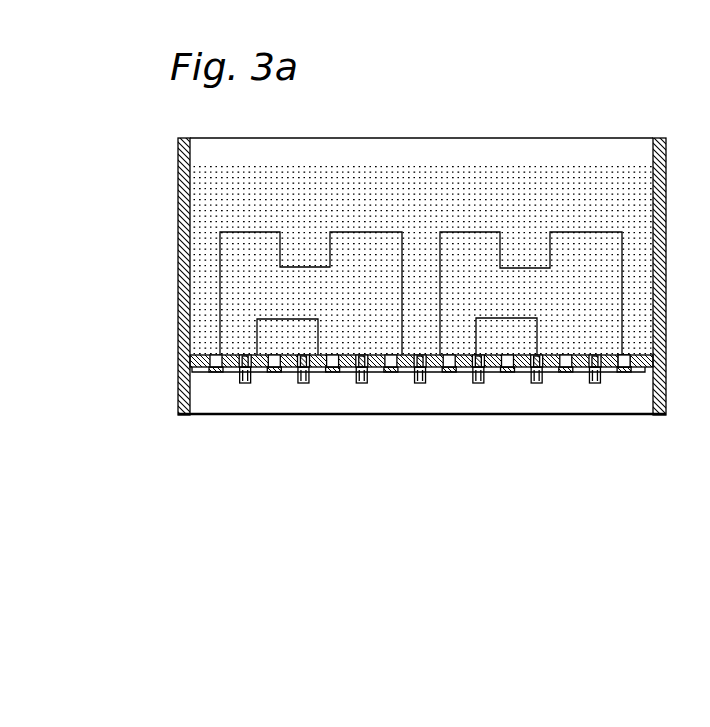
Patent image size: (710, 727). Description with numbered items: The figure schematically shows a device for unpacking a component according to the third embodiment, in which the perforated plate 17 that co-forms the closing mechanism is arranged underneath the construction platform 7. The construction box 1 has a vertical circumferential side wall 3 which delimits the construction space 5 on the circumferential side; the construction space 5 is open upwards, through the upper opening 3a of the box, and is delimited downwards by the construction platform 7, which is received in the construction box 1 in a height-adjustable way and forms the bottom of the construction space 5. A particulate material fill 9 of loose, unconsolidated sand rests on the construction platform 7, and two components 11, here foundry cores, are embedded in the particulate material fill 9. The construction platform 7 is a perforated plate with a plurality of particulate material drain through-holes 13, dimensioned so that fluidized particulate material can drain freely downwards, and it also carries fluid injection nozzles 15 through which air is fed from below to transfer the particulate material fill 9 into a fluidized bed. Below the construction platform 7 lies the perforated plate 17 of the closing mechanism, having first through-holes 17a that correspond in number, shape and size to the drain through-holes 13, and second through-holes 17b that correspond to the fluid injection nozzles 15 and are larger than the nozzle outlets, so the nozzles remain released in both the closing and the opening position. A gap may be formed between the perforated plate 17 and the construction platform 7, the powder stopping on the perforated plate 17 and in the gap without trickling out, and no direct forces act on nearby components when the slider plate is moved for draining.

The construction box 1 is at (376, 245).
The side wall 3 is at (180, 177).
The container opening 3a is at (197, 150).
The construction space 5 is at (422, 152).
The construction platform 7 is at (190, 362).
The particulate material fill 9 is at (207, 206).
The components 11 is at (237, 325).
The particulate material drain through-holes 13 is at (626, 356).
The fluid injection nozzles 15 is at (244, 383).
The perforated plate 17 is at (363, 415).
The first through-holes 17a is at (378, 372).
The second through-holes 17b is at (356, 371).